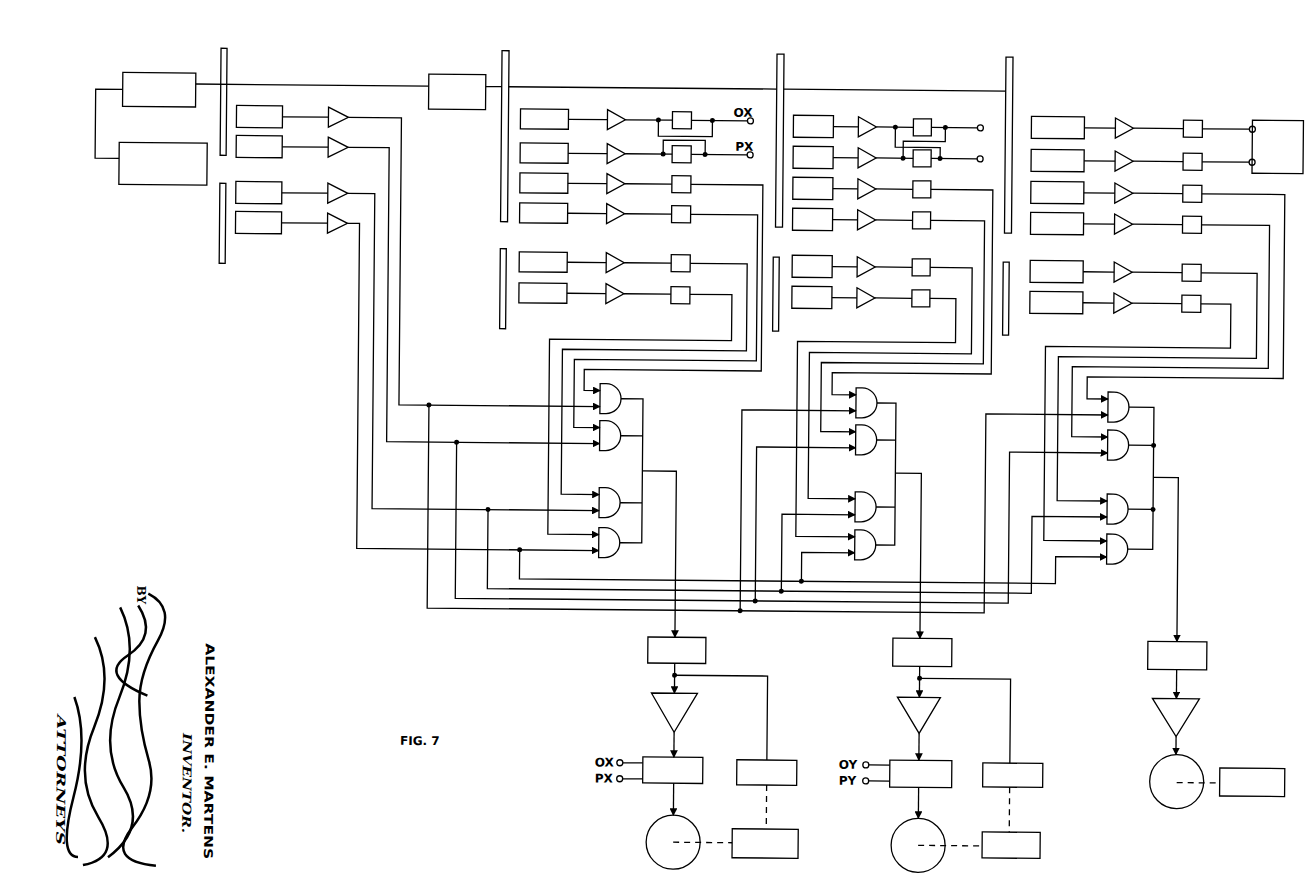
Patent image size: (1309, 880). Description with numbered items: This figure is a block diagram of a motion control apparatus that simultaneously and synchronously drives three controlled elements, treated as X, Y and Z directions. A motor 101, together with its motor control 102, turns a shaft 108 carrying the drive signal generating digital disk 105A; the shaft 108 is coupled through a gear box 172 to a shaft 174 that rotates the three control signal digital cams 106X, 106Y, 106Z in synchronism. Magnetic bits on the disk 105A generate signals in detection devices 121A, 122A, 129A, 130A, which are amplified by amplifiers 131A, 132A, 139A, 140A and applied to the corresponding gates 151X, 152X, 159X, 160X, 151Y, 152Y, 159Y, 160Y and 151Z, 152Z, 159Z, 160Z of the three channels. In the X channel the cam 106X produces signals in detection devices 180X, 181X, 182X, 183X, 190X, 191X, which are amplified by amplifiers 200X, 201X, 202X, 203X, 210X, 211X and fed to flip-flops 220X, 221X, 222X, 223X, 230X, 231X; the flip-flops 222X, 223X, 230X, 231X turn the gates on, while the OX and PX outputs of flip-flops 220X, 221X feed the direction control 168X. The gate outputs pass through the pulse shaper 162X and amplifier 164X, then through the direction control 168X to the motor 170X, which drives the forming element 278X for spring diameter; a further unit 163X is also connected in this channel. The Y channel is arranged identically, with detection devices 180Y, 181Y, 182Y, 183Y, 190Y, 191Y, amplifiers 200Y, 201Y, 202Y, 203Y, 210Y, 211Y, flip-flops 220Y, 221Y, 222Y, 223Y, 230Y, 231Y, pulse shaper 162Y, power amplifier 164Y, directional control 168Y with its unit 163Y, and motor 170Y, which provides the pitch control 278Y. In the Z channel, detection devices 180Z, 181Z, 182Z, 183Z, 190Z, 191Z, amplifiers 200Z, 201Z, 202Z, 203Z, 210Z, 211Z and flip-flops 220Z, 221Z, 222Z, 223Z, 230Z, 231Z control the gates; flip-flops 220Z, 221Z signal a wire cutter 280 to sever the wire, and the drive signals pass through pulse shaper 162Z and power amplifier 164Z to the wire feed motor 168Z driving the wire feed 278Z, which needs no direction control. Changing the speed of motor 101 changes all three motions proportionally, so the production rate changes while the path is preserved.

The motor 101 is at (130, 77).
The motor control 102 is at (129, 147).
The drive signal generating digital disk 105A is at (224, 68).
The shaft 108 is at (299, 88).
The detection device 121A is at (259, 116).
The detection device 122A is at (259, 146).
The detection device 129A is at (259, 192).
The detection device 130A is at (258, 222).
The amplifier 131A is at (337, 115).
The amplifier 132A is at (337, 146).
The amplifier 139A is at (333, 188).
The amplifier 140A is at (333, 237).
The gear box 172 is at (457, 91).
The shaft 174 is at (583, 88).
The control signal digital cam 106X is at (507, 60).
The control signal digital cam 106Y is at (781, 62).
The control signal digital cam 106Z is at (1010, 62).
The detection device 180X is at (544, 119).
The detection device 181X is at (544, 153).
The detection device 182X is at (544, 183).
The detection device 183X is at (544, 213).
The detection device 190X is at (543, 262).
The detection device 191X is at (543, 293).
The amplifier 200X is at (609, 112).
The amplifier 201X is at (611, 148).
The amplifier 202X is at (611, 179).
The amplifier 203X is at (613, 209).
The amplifier 210X is at (614, 256).
The amplifier 211X is at (612, 289).
The flip-flop 220X is at (681, 112).
The flip-flop 221X is at (690, 163).
The flip-flop 222X is at (689, 193).
The flip-flop 223X is at (689, 223).
The flip-flop 230X is at (687, 258).
The flip-flop 231X is at (687, 291).
The detection device 180Y is at (813, 126).
The detection device 181Y is at (813, 157).
The detection device 182Y is at (813, 188).
The detection device 183Y is at (812, 219).
The detection device 190Y is at (812, 266).
The detection device 191Y is at (812, 297).
The amplifier 200Y is at (861, 116).
The amplifier 201Y is at (865, 166).
The amplifier 202Y is at (866, 197).
The amplifier 203Y is at (866, 228).
The amplifier 210Y is at (866, 262).
The amplifier 211Y is at (866, 292).
The flip-flop 220Y is at (921, 116).
The flip-flop 221Y is at (929, 164).
The flip-flop 222Y is at (923, 196).
The flip-flop 223Y is at (926, 227).
The flip-flop 230Y is at (922, 260).
The flip-flop 231Y is at (922, 292).
The detection device 180Z is at (1057, 127).
The detection device 181Z is at (1057, 160).
The detection device 182Z is at (1057, 192).
The detection device 183Z is at (1056, 223).
The detection device 190Z is at (1056, 271).
The detection device 191Z is at (1056, 302).
The amplifier 200Z is at (1117, 113).
The amplifier 201Z is at (1118, 152).
The amplifier 202Z is at (1119, 185).
The amplifier 203Z is at (1119, 215).
The amplifier 210Z is at (1117, 262).
The amplifier 211Z is at (1118, 293).
The flip-flop 220Z is at (1194, 115).
The flip-flop 221Z is at (1197, 148).
The flip-flop 222Z is at (1197, 186).
The flip-flop 223Z is at (1197, 217).
The flip-flop 230Z is at (1193, 262).
The flip-flop 231Z is at (1193, 294).
The wire cutter 280 is at (1276, 146).
The gate 151X is at (619, 392).
The gate 152X is at (618, 436).
The gate 159X is at (617, 478).
The gate 160X is at (610, 556).
The gate 151Y is at (874, 393).
The gate 152Y is at (874, 440).
The gate 159Y is at (867, 496).
The gate 160Y is at (865, 556).
The gate 151Z is at (1127, 396).
The gate 152Z is at (1128, 440).
The gate 159Z is at (1122, 480).
The gate 160Z is at (1119, 565).
The pulse shaper 162X is at (677, 650).
The pulse shaper 162Y is at (922, 652).
The pulse shaper 162Z is at (1177, 655).
The amplifier 164X is at (667, 709).
The power amplifier 164Y is at (912, 709).
The power amplifier 164Z is at (1162, 716).
The direction control 168X is at (673, 770).
The direction control 168Y is at (921, 774).
The indicator 168Z is at (1186, 765).
The register 163X is at (767, 773).
The register 163Y is at (1013, 775).
The motor 170X is at (650, 838).
The motor 170Y is at (896, 840).
The forming element 278X is at (765, 844).
The pitch control 278Y is at (1011, 845).
The forming element 278Z is at (1252, 782).